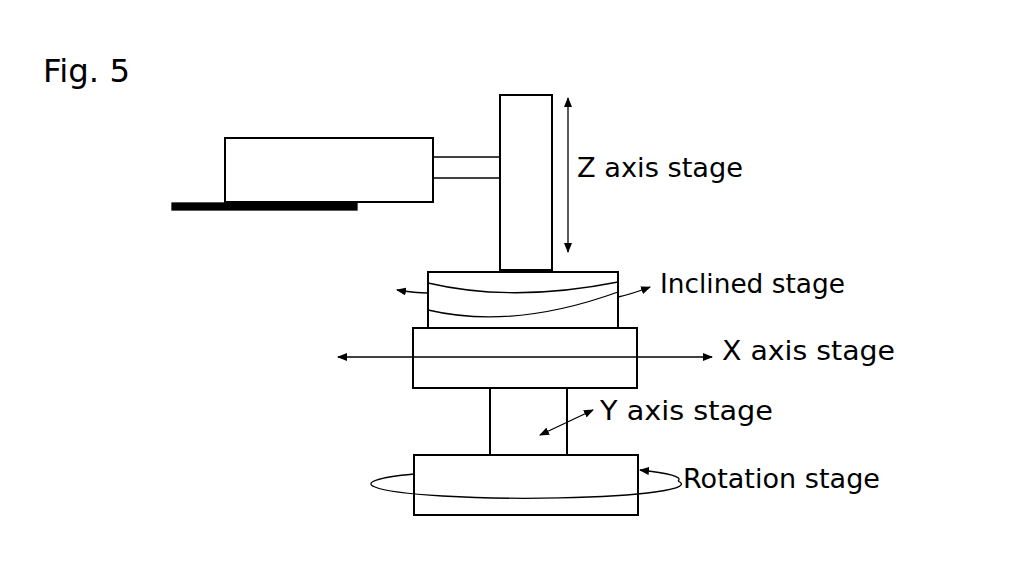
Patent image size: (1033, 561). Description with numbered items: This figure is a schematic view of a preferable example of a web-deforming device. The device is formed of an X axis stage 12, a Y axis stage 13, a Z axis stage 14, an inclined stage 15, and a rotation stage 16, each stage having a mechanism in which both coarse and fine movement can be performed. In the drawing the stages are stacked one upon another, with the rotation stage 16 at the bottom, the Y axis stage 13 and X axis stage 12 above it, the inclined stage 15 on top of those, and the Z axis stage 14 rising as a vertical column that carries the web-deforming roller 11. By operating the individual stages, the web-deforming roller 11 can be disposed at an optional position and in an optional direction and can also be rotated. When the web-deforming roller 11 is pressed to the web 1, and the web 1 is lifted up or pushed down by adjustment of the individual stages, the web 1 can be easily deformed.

The web 1 is at (242, 213).
The web-deforming roller 11 is at (318, 145).
The X axis stage 12 is at (427, 375).
The Y axis stage 13 is at (508, 420).
The Z axis stage 14 is at (527, 92).
The inclined stage 15 is at (443, 312).
The rotation stage 16 is at (427, 505).